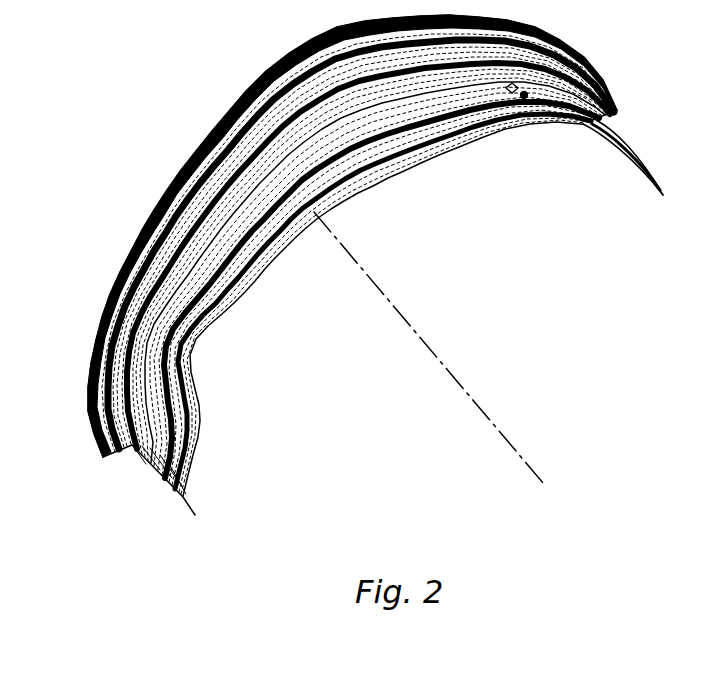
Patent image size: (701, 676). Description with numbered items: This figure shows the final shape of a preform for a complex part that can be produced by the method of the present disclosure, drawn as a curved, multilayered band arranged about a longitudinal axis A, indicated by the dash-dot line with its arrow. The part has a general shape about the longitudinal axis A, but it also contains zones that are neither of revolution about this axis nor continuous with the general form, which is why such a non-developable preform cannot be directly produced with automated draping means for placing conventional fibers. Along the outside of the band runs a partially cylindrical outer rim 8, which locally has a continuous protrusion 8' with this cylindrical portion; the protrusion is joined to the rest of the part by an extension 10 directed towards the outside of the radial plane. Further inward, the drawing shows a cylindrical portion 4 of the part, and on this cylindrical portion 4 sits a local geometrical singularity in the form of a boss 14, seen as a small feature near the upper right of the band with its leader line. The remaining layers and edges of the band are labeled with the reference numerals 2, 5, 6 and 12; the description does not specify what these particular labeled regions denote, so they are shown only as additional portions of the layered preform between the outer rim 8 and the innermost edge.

The curved body / main layer 2 is at (367, 100).
The cylindrical portion 4 is at (237, 232).
The inner layer 5 is at (340, 193).
The end face 6 is at (120, 440).
The partially cylindrical outer rim 8 is at (334, 236).
The continuous protrusion 8' is at (352, 236).
The extension 10 is at (300, 78).
The inner edge 12 is at (283, 247).
The boss 14 is at (526, 97).
The longitudinal axis A is at (537, 460).